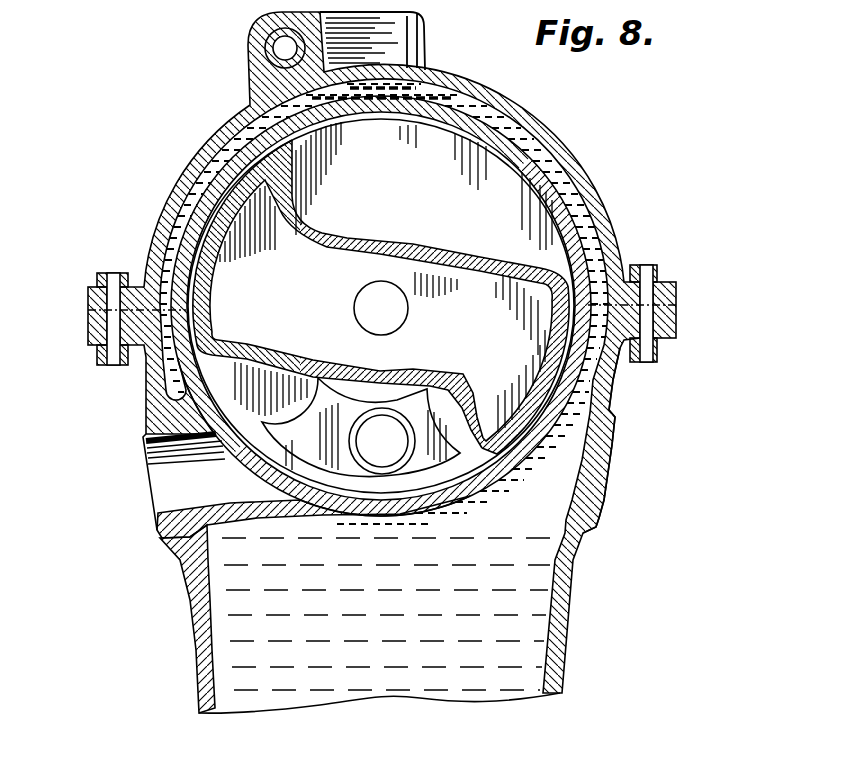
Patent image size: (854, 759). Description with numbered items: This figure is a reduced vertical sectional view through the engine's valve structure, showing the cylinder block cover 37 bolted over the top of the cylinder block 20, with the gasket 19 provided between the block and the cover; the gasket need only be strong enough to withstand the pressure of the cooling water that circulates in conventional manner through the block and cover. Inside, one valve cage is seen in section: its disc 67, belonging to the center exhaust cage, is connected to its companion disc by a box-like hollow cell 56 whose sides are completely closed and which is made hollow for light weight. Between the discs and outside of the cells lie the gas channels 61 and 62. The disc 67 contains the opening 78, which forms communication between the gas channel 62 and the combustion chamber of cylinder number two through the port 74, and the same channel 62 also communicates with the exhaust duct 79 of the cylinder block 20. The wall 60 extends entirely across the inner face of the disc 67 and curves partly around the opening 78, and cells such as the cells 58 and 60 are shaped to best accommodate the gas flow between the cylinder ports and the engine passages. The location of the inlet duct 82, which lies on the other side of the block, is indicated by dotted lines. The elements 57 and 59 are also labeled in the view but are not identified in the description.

The gasket 19 is at (577, 303).
The cylinder block 20 is at (557, 614).
The cylinder block cover 37 is at (580, 173).
The box-like hollow cell 56 is at (397, 268).
The partition wall 57 is at (203, 298).
The cell 58 is at (372, 246).
The partition wall 59 is at (557, 350).
The cell wall 60 is at (385, 366).
The gas channel 61 is at (434, 131).
The gas channel 62 is at (213, 373).
The disc 67 is at (507, 153).
The port 74 is at (380, 456).
The opening 78 is at (283, 427).
The exhaust duct 79 is at (156, 481).
The inlet duct 82 is at (615, 430).